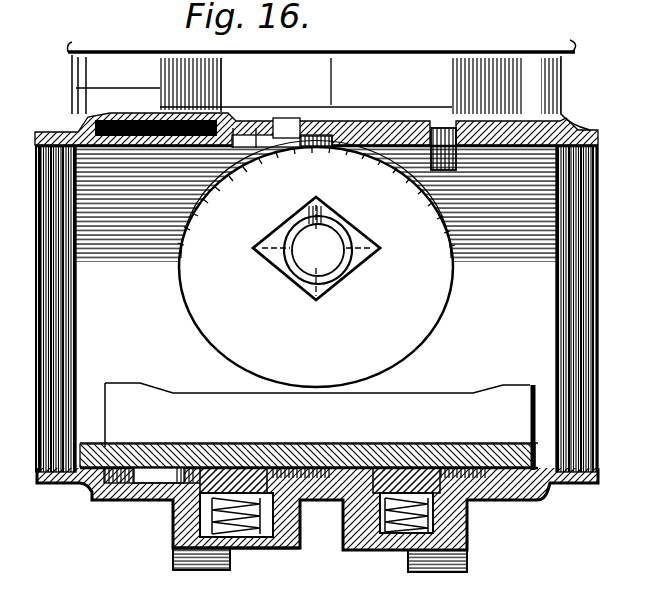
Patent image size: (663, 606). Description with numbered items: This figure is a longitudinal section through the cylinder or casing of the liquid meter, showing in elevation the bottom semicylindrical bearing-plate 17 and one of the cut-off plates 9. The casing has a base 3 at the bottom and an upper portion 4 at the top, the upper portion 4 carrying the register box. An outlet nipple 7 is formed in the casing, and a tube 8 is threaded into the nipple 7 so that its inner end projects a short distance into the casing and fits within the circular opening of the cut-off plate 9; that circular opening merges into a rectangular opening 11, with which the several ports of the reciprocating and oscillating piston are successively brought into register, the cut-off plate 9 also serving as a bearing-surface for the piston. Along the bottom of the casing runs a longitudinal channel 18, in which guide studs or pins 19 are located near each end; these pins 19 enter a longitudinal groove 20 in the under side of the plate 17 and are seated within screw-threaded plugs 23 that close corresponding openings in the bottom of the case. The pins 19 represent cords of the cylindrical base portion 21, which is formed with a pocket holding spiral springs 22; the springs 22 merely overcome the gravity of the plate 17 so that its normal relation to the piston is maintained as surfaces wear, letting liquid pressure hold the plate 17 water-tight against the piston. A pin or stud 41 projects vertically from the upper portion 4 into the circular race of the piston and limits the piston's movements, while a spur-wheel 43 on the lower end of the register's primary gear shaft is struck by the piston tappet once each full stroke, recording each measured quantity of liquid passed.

The base of the casing 3 is at (470, 527).
The upper portion of the casing 4 is at (316, 93).
The outlet nipple 7 is at (317, 309).
The tubes 8 is at (318, 250).
The cut-off plates 9 is at (316, 264).
The rectangular opening 11 is at (360, 249).
The bearing-plate 17 is at (328, 454).
The longitudinal channel 18 is at (115, 490).
The guide studs or pins 19 is at (218, 470).
The longitudinal groove 20 is at (163, 490).
The cylindrical base portion 21 is at (253, 549).
The spiral springs 22 is at (198, 571).
The screw-threaded plugs 23 is at (270, 550).
The pin or stud 41 is at (440, 133).
The spur-wheel 43 is at (233, 142).